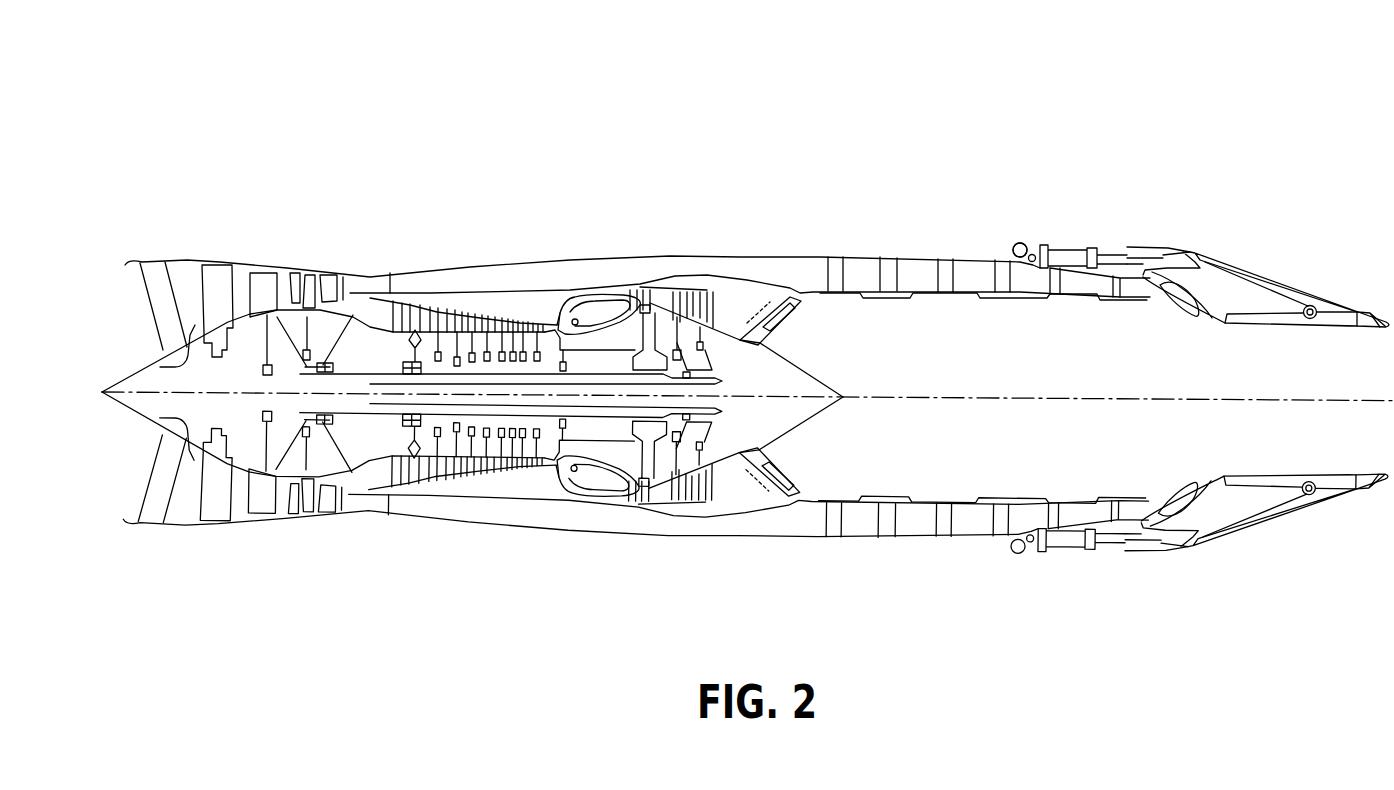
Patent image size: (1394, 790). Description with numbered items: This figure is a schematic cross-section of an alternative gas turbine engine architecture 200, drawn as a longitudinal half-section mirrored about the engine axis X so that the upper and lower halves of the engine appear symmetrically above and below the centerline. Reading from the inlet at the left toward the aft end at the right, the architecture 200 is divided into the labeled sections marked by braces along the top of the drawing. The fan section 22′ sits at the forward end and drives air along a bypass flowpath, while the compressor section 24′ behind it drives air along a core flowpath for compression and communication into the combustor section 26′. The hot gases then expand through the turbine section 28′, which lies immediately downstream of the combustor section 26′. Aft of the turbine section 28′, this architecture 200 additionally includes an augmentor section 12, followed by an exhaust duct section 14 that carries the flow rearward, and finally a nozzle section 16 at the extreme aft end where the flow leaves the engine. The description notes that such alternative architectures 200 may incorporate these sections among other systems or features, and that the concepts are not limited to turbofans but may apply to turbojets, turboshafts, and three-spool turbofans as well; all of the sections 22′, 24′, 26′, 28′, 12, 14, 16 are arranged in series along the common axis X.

The engine architecture 200 is at (1010, 103).
The engine central longitudinal axis X is at (1018, 404).
The fan section 22′ is at (347, 189).
The compressor section 24′ is at (567, 191).
The combustor section 26′ is at (642, 192).
The turbine section 28′ is at (722, 192).
The augmentor section 12 is at (857, 193).
The exhaust duct section 14 is at (1135, 195).
The nozzle section 16 is at (1389, 198).